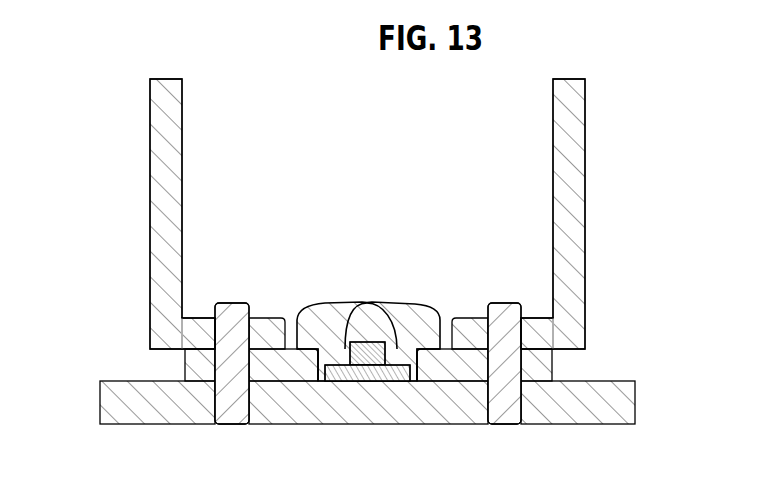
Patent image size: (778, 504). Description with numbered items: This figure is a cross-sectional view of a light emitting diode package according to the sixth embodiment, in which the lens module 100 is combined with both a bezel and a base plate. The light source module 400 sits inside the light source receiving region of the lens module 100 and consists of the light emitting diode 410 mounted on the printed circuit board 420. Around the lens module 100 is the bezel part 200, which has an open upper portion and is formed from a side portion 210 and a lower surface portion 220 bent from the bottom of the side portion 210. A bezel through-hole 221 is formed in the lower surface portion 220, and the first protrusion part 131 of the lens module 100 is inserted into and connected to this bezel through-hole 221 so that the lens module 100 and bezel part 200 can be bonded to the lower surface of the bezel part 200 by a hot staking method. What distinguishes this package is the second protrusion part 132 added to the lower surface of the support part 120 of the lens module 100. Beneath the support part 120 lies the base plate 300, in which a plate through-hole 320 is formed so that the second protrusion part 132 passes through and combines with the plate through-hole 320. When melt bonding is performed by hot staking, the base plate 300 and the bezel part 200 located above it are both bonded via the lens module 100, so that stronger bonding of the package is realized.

The lens module 100 is at (297, 367).
The support part 120 is at (540, 365).
The first protrusion part 131 is at (500, 305).
The second protrusion part 132 is at (500, 413).
The bezel part 200 is at (452, 216).
The side portion 210 is at (570, 275).
The lower surface portion 220 is at (525, 332).
The bezel through-hole 221 is at (461, 318).
The base plate 300 is at (620, 402).
The plate through-hole 320 is at (523, 400).
The light source module 400 is at (368, 296).
The light emitting diode 410 is at (367, 342).
The printed circuit board 420 is at (398, 370).